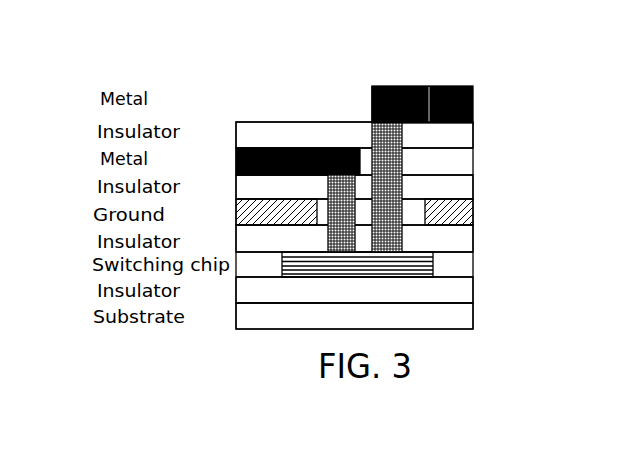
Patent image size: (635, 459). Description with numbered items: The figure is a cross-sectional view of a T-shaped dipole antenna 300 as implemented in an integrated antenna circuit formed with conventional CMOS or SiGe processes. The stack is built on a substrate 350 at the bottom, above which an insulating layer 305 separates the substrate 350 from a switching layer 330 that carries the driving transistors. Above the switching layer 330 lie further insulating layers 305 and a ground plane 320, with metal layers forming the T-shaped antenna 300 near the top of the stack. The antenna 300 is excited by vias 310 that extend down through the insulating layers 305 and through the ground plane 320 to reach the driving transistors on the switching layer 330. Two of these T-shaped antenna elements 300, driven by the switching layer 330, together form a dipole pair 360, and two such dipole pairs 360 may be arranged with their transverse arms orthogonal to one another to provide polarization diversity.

The T-shaped dipole antenna 300 is at (458, 82).
The insulating layer 305 is at (475, 135).
The via 310 is at (406, 157).
The ground plane 320 is at (478, 210).
The switching layer 330 is at (436, 264).
The substrate 350 is at (478, 317).
The dipole pair 360 is at (317, 146).